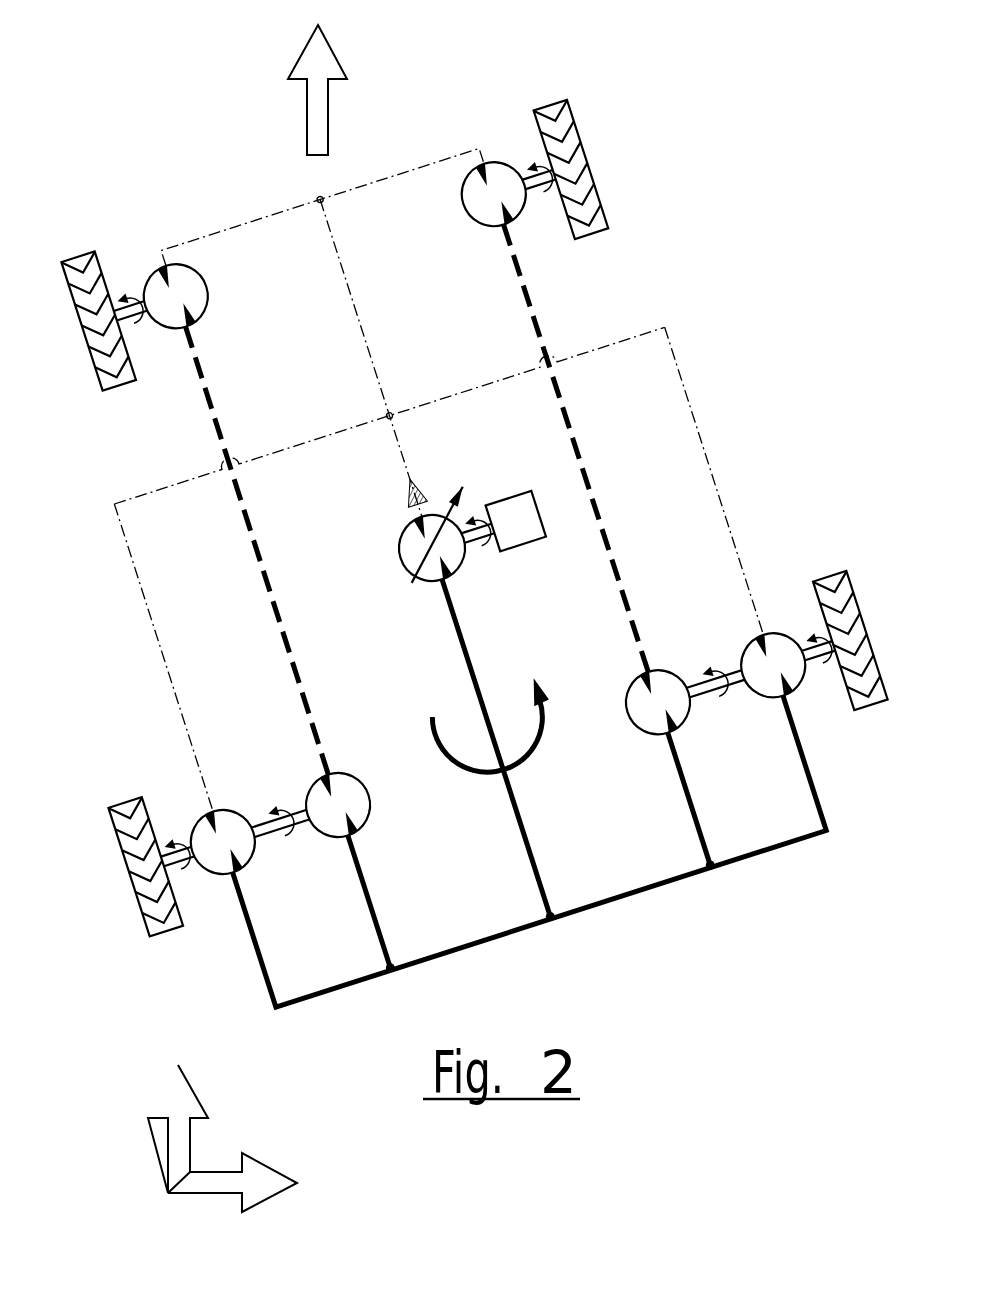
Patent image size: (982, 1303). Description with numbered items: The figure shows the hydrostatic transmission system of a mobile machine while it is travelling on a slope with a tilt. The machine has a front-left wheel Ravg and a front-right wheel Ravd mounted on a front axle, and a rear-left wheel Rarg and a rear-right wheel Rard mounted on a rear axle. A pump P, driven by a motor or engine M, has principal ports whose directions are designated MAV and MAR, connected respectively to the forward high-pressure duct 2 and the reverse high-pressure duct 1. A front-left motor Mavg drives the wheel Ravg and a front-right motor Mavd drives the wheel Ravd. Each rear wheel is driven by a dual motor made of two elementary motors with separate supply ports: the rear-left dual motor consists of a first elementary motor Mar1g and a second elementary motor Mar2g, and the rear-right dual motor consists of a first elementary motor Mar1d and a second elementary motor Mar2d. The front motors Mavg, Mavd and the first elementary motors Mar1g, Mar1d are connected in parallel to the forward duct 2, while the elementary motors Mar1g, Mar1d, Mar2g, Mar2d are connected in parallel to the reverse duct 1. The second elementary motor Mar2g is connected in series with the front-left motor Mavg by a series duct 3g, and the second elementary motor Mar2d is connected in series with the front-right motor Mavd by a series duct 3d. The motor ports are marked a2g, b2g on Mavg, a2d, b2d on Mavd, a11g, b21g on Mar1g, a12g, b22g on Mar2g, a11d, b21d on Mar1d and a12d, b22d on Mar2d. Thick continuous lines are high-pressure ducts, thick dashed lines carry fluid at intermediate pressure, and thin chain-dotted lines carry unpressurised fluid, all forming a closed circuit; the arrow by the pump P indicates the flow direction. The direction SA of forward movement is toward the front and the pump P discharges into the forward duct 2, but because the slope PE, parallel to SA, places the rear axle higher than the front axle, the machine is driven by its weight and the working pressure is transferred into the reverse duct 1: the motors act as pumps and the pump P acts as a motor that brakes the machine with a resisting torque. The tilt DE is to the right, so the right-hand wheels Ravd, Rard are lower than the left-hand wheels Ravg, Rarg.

The reverse high-pressure duct 1 is at (473, 667).
The forward high-pressure duct 2 is at (400, 452).
The series duct 3g is at (276, 578).
The series duct 3d is at (603, 523).
The pump P is at (400, 544).
The motor or engine M is at (507, 492).
The forward high-pressure duct port MAV is at (396, 508).
The reverse high-pressure duct port MAR is at (427, 588).
The direction of forward movement SA is at (317, 77).
The slope PE is at (178, 1114).
The tilt DE is at (251, 1182).
The front-left wheel Ravg is at (79, 253).
The front-right wheel Ravd is at (546, 100).
The rear-left wheel Rarg is at (123, 797).
The rear-right wheel Rard is at (828, 575).
The front-left motor Mavg is at (206, 306).
The front-right motor Mavd is at (481, 227).
The first elementary motor of rear-left dual motor Mar1g is at (249, 853).
The second elementary motor of rear-left dual motor Mar2g is at (367, 817).
The first elementary motor of rear-right dual motor Mar1d is at (797, 688).
The second elementary motor of rear-right dual motor Mar2d is at (686, 714).
The port a of front left motor a2g is at (156, 270).
The port b of front left motor b2g is at (176, 320).
The port a of front right motor a2d is at (496, 167).
The port b of front right motor b2d is at (517, 217).
The port a of rear left outer motor a11g is at (221, 868).
The port b of rear left outer motor b21g is at (224, 814).
The port a of rear left inner motor a12g is at (336, 831).
The port b of rear left inner motor b22g is at (339, 777).
The port a of rear right outer motor a11d is at (771, 693).
The port b of rear right outer motor b21d is at (776, 638).
The port a of rear right inner motor a12d is at (655, 729).
The port b of rear right inner motor b22d is at (660, 675).